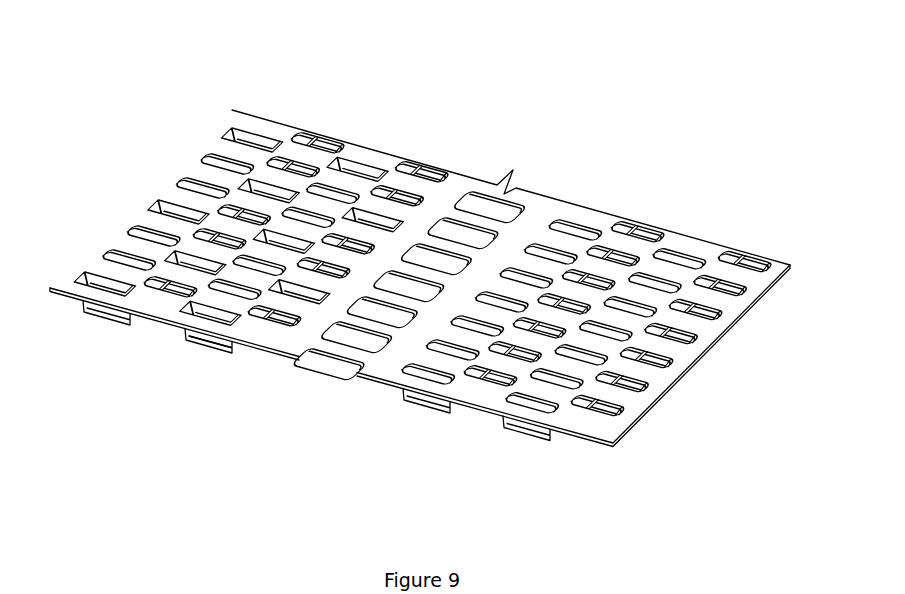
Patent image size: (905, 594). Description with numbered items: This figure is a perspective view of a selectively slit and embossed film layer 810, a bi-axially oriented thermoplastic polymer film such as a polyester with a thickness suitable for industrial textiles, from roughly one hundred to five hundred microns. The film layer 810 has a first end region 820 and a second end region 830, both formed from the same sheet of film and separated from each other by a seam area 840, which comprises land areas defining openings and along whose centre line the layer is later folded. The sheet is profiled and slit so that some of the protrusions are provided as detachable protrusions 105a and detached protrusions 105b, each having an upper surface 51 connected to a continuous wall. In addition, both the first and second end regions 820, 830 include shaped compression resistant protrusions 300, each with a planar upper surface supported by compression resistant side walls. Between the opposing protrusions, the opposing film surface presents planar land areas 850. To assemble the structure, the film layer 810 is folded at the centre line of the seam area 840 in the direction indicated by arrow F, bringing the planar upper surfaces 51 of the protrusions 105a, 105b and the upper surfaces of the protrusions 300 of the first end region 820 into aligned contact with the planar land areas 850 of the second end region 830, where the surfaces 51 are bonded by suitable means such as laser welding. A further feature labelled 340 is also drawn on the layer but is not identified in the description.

The film layer 810 is at (176, 128).
The first end region 820 is at (248, 95).
The second end region 830 is at (562, 188).
The detachable protrusion 105a is at (162, 250).
The detached protrusion 105b is at (192, 342).
The compression resistant protrusion 300 is at (166, 299).
The upper surface 51 is at (210, 339).
The seam area 840 is at (358, 379).
The planar land area 850 is at (647, 375).
The end aperture 340 is at (607, 406).
The arrow F is at (350, 478).